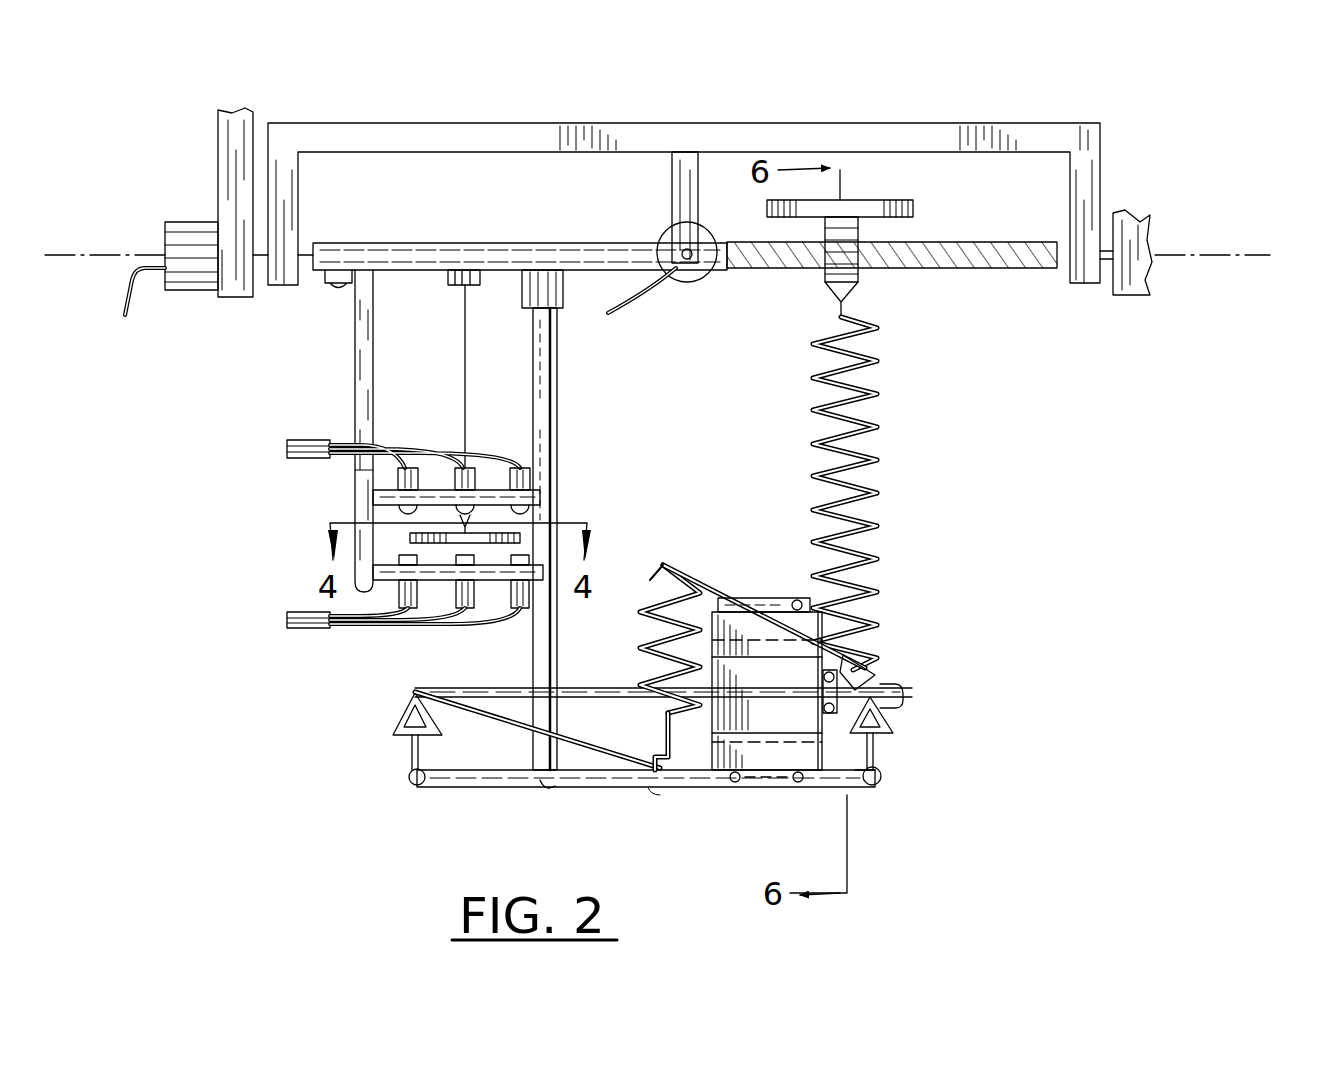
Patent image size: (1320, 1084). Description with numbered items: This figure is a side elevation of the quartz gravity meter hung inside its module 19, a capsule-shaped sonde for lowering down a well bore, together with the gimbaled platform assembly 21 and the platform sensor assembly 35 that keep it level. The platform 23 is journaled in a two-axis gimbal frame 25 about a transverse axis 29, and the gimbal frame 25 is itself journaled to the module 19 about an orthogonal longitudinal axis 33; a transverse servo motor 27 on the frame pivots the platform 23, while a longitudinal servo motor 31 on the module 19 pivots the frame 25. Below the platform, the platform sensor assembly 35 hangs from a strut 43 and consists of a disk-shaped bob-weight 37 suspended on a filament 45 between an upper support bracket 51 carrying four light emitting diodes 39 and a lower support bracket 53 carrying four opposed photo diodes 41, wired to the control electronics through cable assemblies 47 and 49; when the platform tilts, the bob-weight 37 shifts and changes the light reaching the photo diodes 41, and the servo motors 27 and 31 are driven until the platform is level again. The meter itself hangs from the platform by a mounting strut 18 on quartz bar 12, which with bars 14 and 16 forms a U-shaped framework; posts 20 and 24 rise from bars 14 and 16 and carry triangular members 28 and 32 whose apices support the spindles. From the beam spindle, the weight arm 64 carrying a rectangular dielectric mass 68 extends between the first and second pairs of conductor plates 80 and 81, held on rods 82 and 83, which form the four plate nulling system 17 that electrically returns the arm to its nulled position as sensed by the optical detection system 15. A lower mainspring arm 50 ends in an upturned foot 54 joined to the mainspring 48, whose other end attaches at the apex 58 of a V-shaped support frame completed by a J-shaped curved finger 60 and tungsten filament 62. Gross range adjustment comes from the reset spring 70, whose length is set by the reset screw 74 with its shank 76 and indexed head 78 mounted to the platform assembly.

The quartz bar 12 is at (472, 788).
The quartz bar 14 is at (407, 780).
The optical detection system 15 is at (879, 773).
The quartz bar 16 is at (882, 783).
The four plate conductor and dielectric nulling system 17 is at (803, 594).
The mounting strut 18 is at (557, 365).
The module 19 is at (214, 133).
The post 20 is at (407, 748).
The gimbaled platform assembly 21 is at (369, 121).
The platform 23 is at (398, 243).
The post 24 is at (875, 752).
The two-axis gimbal frame 25 is at (672, 190).
The transverse servo motor 27 is at (686, 283).
The triangular member 28 is at (397, 712).
The transverse axis 29 is at (694, 259).
The longitudinal servo motor 31 is at (186, 222).
The triangular member 32 is at (894, 724).
The longitudinal axis 33 is at (82, 255).
The platform sensor assembly 35 is at (351, 476).
The bob-weight 37 is at (545, 525).
The light emitting diodes 39 is at (418, 466).
The photo diodes 41 is at (520, 612).
The strut 43 is at (373, 322).
The filament 45 is at (465, 355).
The cable assembly 47 is at (304, 438).
The mainspring 48 is at (647, 632).
The cable assembly 49 is at (310, 630).
The lower mainspring arm 50 is at (512, 730).
The upper support bracket 51 is at (553, 492).
The lower support bracket 53 is at (385, 580).
The upturned foot 54 is at (650, 790).
The apex 58 is at (663, 565).
The J-shaped curved finger 60 is at (904, 707).
The tungsten filament 62 is at (872, 673).
The weight arm 64 is at (480, 690).
The dielectric mass 68 is at (665, 717).
The reset spring 70 is at (858, 388).
The reset screw 74 is at (858, 235).
The shank 76 is at (858, 278).
The head 78 is at (893, 200).
The first pair of conductor plates 80 is at (787, 790).
The second pair of conductor plates 81 is at (822, 617).
The first pair of rods 82 is at (733, 783).
The second pair of rods 83 is at (793, 600).